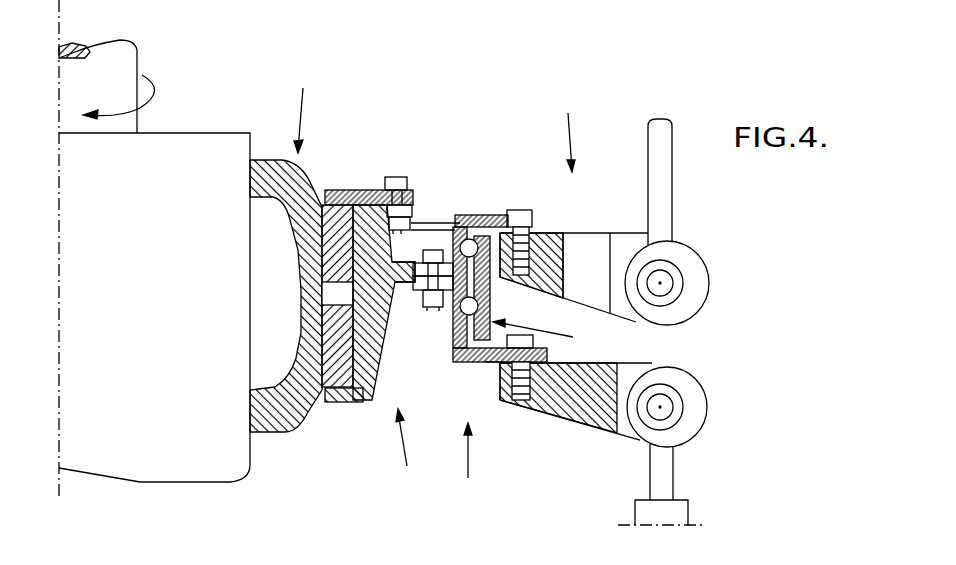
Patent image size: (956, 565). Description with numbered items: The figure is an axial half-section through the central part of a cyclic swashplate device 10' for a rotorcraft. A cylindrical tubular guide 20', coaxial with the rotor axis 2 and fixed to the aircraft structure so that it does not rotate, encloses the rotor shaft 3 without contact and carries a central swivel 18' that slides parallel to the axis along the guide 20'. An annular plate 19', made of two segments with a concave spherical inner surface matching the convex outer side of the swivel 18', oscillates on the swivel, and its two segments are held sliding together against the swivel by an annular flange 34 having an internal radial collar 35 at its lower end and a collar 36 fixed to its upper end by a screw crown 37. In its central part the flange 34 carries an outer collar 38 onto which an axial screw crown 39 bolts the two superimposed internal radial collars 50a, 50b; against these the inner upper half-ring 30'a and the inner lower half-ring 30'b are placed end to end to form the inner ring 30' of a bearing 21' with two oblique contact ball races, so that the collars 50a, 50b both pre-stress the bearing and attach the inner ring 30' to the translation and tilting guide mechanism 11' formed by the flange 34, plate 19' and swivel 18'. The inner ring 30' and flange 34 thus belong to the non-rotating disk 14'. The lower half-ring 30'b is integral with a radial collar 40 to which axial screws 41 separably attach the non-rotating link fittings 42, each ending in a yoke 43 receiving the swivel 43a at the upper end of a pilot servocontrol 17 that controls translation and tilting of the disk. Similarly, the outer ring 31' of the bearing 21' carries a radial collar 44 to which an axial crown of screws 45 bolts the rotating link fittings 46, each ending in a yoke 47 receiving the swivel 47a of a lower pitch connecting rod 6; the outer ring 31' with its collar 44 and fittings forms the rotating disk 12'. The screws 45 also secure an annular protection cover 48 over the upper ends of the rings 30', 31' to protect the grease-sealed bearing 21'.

The rotor axis Z-Z 2 is at (59, 6).
The rotor shaft 3 is at (115, 63).
The cylindrical tubular guide 20' is at (154, 273).
The translation and tilting guide mechanism 11' is at (305, 105).
The annular plate 19' is at (336, 242).
The collar 36 is at (361, 190).
The screw crown 37 is at (395, 177).
The outer collar 38 is at (410, 262).
The annular protection cover 48 is at (463, 217).
The axial screw crown 39 is at (433, 250).
The inner upper half-ring 30'a is at (492, 186).
The rotating disk 12' is at (567, 128).
The outer ring of bearing 31' is at (506, 254).
The radial collar 44 is at (533, 228).
The axial crown of screws 45 is at (543, 232).
The pitch connecting rod 6 is at (660, 160).
The rotating link fitting 46 is at (593, 267).
The yoke 47 is at (690, 257).
The swivel 47a is at (683, 287).
The inner ring of bearing 30' is at (495, 287).
The bearing 21' is at (546, 336).
The yoke 43 is at (687, 378).
The swivel 43a is at (687, 419).
The pilot servocontrol 17 is at (690, 503).
The non-rotating link fitting 42 is at (573, 400).
The axial screws 41 is at (522, 401).
The radial collar 40 is at (494, 362).
The cyclic swashplate device 10' is at (470, 464).
The internal radial collar 50a is at (408, 290).
The internal radial collar 50b is at (424, 296).
The non-rotating disk 14' is at (409, 454).
The annular flange 34 is at (372, 392).
The internal radial collar 35 is at (335, 402).
The central swivel 18' is at (286, 328).
The inner lower half-ring 30'b is at (498, 377).